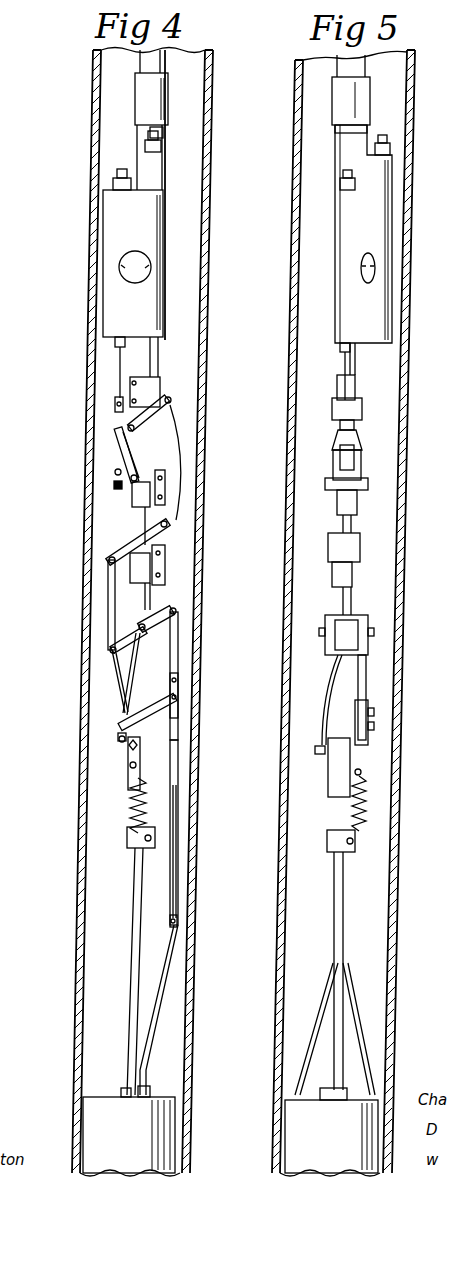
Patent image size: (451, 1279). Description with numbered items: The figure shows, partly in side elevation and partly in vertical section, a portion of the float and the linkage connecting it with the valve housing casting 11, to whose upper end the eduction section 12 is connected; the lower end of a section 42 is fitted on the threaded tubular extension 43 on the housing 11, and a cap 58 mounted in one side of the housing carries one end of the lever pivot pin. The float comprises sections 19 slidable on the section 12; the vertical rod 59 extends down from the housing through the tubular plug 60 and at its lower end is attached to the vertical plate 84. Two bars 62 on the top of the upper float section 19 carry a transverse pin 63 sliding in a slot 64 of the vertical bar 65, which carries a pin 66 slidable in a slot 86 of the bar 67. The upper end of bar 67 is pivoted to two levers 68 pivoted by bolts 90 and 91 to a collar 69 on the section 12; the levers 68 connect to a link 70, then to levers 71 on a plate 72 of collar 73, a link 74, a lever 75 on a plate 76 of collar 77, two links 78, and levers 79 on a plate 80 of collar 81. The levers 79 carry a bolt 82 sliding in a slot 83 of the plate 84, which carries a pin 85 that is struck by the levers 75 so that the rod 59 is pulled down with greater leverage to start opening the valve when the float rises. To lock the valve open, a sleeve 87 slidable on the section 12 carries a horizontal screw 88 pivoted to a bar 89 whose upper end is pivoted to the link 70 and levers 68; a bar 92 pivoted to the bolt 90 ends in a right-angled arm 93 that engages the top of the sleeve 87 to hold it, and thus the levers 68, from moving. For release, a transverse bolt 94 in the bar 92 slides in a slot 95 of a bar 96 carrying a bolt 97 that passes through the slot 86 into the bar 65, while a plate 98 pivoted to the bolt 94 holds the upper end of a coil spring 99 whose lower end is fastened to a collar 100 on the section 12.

In FIG. 4, the valve housing casting 11 is at (112, 298).
In FIG. 5, the valve housing casting 11 is at (345, 240).
In FIG. 4, the section 12 is at (158, 352).
In FIG. 5, the section 12 is at (356, 360).
In FIG. 4, the float section 19 is at (95, 1113).
In FIG. 5, the float section 19 is at (293, 1128).
In FIG. 4, the section 42 is at (168, 97).
In FIG. 4, the tubular extension 43 is at (163, 134).
In FIG. 5, the tubular extension 43 is at (343, 143).
In FIG. 4, the cap 58 is at (119, 268).
In FIG. 5, the cap 58 is at (360, 268).
In FIG. 4, the vertical rod 59 is at (118, 370).
In FIG. 5, the vertical rod 59 is at (343, 365).
In FIG. 4, the tubular plug 60 is at (114, 343).
In FIG. 5, the tubular plug 60 is at (340, 348).
In FIG. 4, the bar 62 is at (145, 1040).
In FIG. 5, the bar 62 is at (330, 1102).
In FIG. 4, the transverse pin 63 is at (178, 920).
In FIG. 4, the longitudinal slot 64 is at (177, 895).
In FIG. 4, the vertical bar 65 is at (178, 765).
In FIG. 4, the pin 66 is at (178, 680).
In FIG. 4, the bar 67 is at (180, 650).
In FIG. 4, the lever 68 is at (176, 618).
In FIG. 5, the lever 68 is at (352, 616).
In FIG. 4, the collar 69 is at (130, 621).
In FIG. 4, the link 70 is at (130, 585).
In FIG. 5, the link 70 is at (338, 597).
In FIG. 4, the lever 71 is at (128, 558).
In FIG. 5, the lever 71 is at (355, 535).
In FIG. 4, the plate 72 is at (165, 550).
In FIG. 4, the collar 73 is at (108, 572).
In FIG. 4, the link 74 is at (166, 500).
In FIG. 4, the lever 75 is at (172, 415).
In FIG. 5, the lever 75 is at (362, 410).
In FIG. 4, the plate 76 is at (118, 417).
In FIG. 4, the collar 77 is at (160, 388).
In FIG. 5, the collar 77 is at (356, 387).
In FIG. 4, the link 78 is at (130, 470).
In FIG. 5, the link 78 is at (368, 465).
In FIG. 4, the lever 79 is at (181, 452).
In FIG. 5, the lever 79 is at (338, 490).
In FIG. 4, the plate 80 is at (166, 475).
In FIG. 4, the collar 81 is at (132, 502).
In FIG. 5, the collar 81 is at (358, 500).
In FIG. 4, the bolt 82 is at (114, 485).
In FIG. 4, the slot 83 is at (115, 472).
In FIG. 4, the vertical plate 84 is at (115, 405).
In FIG. 5, the vertical plate 84 is at (345, 457).
In FIG. 4, the pin 85 is at (118, 446).
In FIG. 5, the pin 85 is at (355, 448).
In FIG. 4, the slot 86 is at (180, 710).
In FIG. 4, the sleeve 87 is at (127, 785).
In FIG. 5, the sleeve 87 is at (328, 786).
In FIG. 5, the horizontal screw 88 is at (315, 750).
In FIG. 4, the bar 89 is at (122, 682).
In FIG. 5, the bar 89 is at (330, 690).
In FIG. 4, the bolt 90 is at (112, 645).
In FIG. 5, the bolt 90 is at (375, 632).
In FIG. 5, the bolt 91 is at (319, 632).
In FIG. 4, the bar 92 is at (128, 705).
In FIG. 5, the bar 92 is at (366, 668).
In FIG. 5, the right-angled arm 93 is at (368, 748).
In FIG. 4, the transverse bolt 94 is at (120, 725).
In FIG. 5, the transverse bolt 94 is at (374, 725).
In FIG. 4, the longitudinal slot 95 is at (129, 748).
In FIG. 4, the bar 96 is at (118, 740).
In FIG. 5, the bar 96 is at (374, 712).
In FIG. 4, the bolt 97 is at (178, 696).
In FIG. 4, the plate 98 is at (129, 768).
In FIG. 5, the plate 98 is at (361, 770).
In FIG. 4, the coil spring 99 is at (136, 806).
In FIG. 5, the coil spring 99 is at (366, 800).
In FIG. 4, the collar 100 is at (127, 840).
In FIG. 5, the collar 100 is at (327, 845).